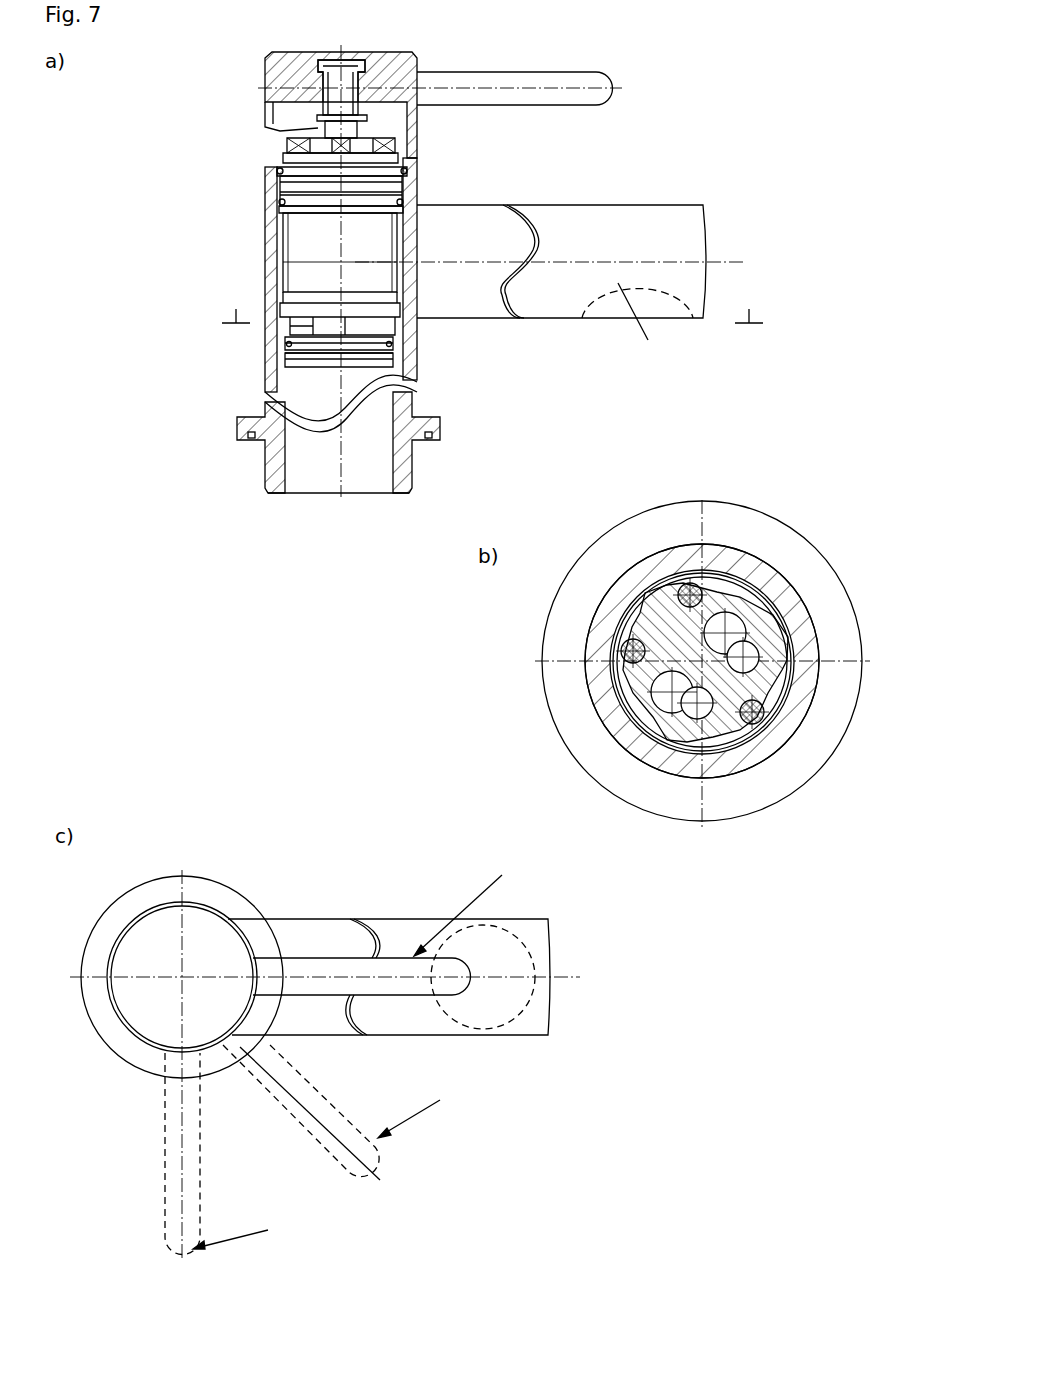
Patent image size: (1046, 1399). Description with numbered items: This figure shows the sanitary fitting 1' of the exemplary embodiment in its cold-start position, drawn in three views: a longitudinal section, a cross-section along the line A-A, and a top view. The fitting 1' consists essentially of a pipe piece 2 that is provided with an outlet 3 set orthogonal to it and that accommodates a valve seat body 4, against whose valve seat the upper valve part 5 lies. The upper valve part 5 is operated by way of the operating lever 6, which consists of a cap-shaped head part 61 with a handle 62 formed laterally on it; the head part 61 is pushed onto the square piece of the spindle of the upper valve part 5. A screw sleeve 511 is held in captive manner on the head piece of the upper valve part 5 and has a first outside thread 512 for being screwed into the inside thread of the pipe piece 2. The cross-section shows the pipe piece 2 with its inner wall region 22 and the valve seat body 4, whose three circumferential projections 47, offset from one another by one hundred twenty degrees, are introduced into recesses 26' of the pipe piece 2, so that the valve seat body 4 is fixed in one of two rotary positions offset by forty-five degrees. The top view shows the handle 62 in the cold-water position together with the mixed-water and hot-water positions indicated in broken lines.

The sanitary fitting 1' is at (710, 117).
The pipe piece 2 is at (265, 272).
The outlet 3 is at (607, 232).
The valve seat body 4 is at (377, 364).
The upper valve part 5 is at (300, 240).
The screw sleeve 511 is at (403, 181).
The first outside thread 512 is at (296, 178).
The operating lever 6 is at (360, 50).
The housing ring 22 is at (568, 693).
The inlet openings 26' is at (655, 673).
The circumferential projections 47 is at (645, 598).
The head part 61 is at (150, 1010).
The handle 62 is at (328, 967).